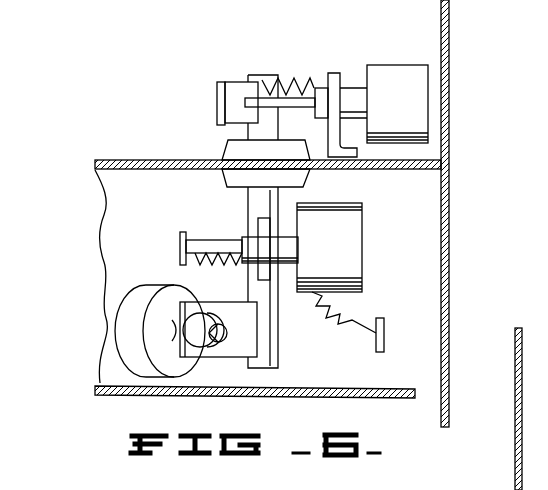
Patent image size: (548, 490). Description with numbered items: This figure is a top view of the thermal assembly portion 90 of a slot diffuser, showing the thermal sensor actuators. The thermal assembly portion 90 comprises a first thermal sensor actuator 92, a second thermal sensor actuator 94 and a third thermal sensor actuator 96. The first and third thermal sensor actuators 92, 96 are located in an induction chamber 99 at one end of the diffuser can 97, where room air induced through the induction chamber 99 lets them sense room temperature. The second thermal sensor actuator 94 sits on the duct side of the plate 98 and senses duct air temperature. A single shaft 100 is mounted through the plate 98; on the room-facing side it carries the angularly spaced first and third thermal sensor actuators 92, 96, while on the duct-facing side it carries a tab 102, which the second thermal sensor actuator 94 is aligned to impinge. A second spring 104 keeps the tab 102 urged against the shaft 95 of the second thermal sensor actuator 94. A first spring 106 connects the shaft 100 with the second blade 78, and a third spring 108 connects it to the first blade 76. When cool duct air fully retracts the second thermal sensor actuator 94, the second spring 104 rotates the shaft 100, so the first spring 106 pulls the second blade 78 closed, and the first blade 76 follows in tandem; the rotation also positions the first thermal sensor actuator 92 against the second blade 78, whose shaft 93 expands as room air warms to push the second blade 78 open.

The first blade 76 is at (180, 240).
The second blade 78 is at (385, 333).
The thermal assembly portion 90 is at (102, 212).
The first thermal sensor actuator 92 is at (127, 310).
The shaft of the first thermal sensor actuator 93 is at (240, 329).
The second thermal sensor actuator 94 is at (413, 80).
The shaft of the second thermal sensor actuator 95 is at (303, 106).
The third thermal sensor actuator 96 is at (352, 260).
The diffuser can 97 is at (450, 100).
The plate 98 is at (409, 170).
The induction chamber 99 is at (193, 196).
The shaft 100 is at (275, 80).
The tab 102 is at (223, 82).
The second spring 104 is at (303, 85).
The first spring 106 is at (352, 322).
The third spring 108 is at (217, 266).